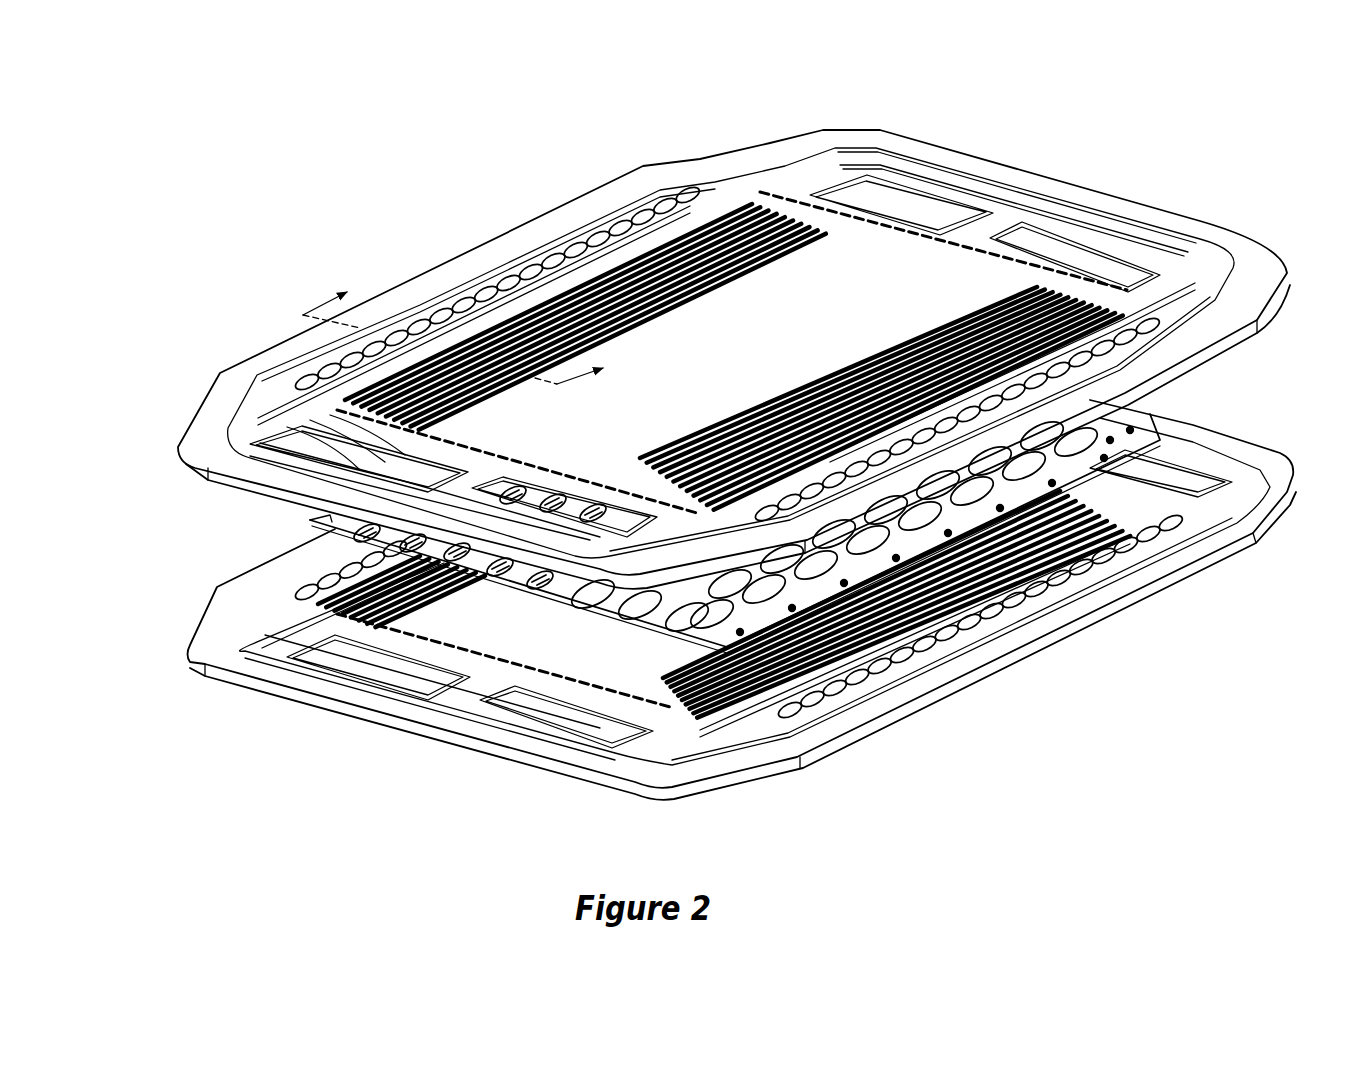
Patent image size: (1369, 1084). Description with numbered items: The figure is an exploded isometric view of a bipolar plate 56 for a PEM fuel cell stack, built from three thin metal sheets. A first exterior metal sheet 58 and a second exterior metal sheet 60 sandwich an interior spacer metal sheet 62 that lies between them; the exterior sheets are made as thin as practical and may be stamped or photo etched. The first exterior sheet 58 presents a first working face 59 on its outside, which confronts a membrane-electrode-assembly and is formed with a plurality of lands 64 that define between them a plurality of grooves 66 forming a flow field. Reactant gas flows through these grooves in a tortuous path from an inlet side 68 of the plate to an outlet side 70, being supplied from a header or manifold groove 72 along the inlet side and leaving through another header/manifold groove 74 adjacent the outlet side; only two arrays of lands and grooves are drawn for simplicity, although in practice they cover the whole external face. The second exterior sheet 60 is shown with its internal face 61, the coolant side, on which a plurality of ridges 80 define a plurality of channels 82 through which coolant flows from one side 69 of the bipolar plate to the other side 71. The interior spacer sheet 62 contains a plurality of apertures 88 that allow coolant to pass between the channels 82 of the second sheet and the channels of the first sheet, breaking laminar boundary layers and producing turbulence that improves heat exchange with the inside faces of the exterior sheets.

The bipolar plate 56 is at (705, 465).
The first exterior metal sheet 58 is at (702, 399).
The first working face 59 is at (677, 337).
The second exterior metal sheet 60 is at (734, 619).
The internal face 61 is at (960, 575).
The interior spacer metal sheet 62 is at (1140, 413).
The lands 64 is at (540, 306).
The grooves 66 is at (478, 355).
The inlet side 68 is at (942, 158).
The one side of the bipolar plate 69 is at (960, 645).
The outlet side 70 is at (197, 470).
The other side of the bipolar plate 71 is at (268, 563).
The header or manifold groove 72 is at (835, 212).
The header/manifold groove 74 is at (393, 470).
The ridges 80 is at (480, 398).
The channels 82 is at (423, 625).
The apertures 88 is at (1210, 490).